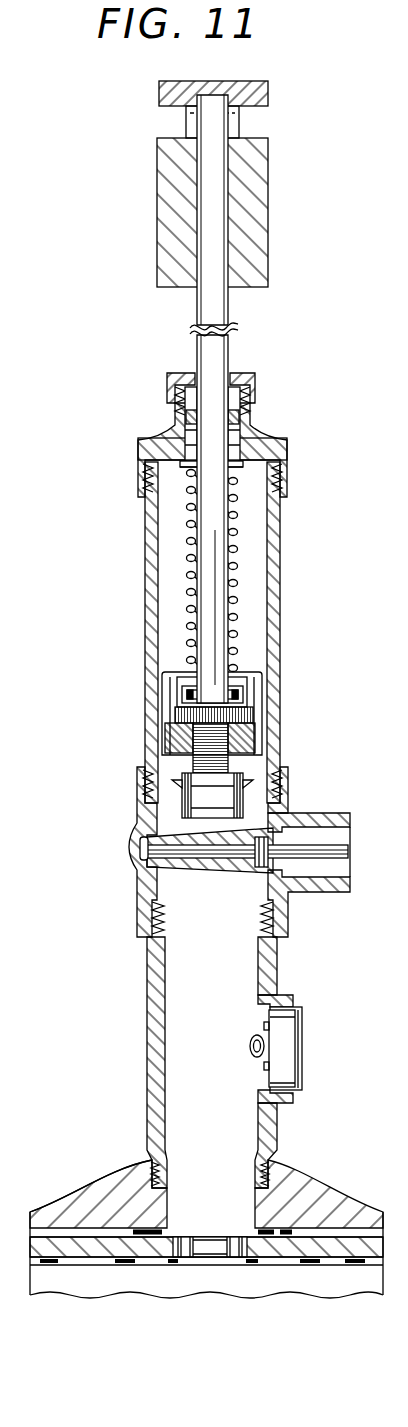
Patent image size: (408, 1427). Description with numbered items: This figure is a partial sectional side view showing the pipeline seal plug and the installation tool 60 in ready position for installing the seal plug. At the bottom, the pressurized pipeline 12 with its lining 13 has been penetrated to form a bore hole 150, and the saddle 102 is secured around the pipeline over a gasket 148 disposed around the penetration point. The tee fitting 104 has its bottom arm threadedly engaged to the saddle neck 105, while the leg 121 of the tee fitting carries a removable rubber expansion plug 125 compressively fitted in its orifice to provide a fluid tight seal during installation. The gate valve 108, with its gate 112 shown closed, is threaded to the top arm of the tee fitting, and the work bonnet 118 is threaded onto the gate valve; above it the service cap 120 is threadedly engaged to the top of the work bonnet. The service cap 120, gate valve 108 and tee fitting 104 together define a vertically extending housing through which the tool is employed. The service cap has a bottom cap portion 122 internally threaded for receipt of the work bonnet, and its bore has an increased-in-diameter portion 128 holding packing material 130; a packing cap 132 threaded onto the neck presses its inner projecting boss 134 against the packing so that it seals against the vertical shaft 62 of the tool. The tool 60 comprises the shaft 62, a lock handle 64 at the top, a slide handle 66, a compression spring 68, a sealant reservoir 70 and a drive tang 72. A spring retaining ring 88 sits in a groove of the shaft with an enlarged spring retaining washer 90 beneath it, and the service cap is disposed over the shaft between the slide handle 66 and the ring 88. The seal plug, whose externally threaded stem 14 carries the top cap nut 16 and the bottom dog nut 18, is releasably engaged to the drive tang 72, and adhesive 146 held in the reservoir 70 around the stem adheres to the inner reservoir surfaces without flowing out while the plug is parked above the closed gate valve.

The seal plug installation tool 60 is at (107, 220).
The vertical shaft 62 is at (229, 315).
The lock handle 64 is at (273, 88).
The slide handle 66 is at (272, 193).
The compression spring 68 is at (238, 513).
The sealant reservoir 70 is at (250, 666).
The drive tang 72 is at (179, 692).
The stem 14 is at (192, 758).
The top cap nut 16 is at (176, 715).
The bottom dog nut 18 is at (179, 801).
The spring retaining ring 88 is at (243, 461).
The spring retaining washer 90 is at (245, 468).
The saddle 102 is at (340, 1174).
The tee fitting 104 is at (144, 1060).
The saddle neck 105 is at (103, 1188).
The gate valve 108 is at (329, 812).
The gate 112 is at (168, 870).
The work bonnet 118 is at (280, 570).
The service cap 120 is at (278, 437).
The leg of the tee fitting 121 is at (294, 997).
The bottom cap portion 122 is at (138, 447).
The rubber expansion plug 125 is at (303, 1048).
The increased-in-diameter portion 128 is at (180, 413).
The packing material 130 is at (238, 418).
The packing cap 132 is at (240, 372).
The inner projecting boss 134 is at (255, 380).
The adhesive 146 is at (254, 738).
The gasket 148 is at (138, 1233).
The bore hole 150 is at (237, 1248).
The pressurized pipeline 12 is at (290, 1245).
The lining 13 is at (333, 1262).